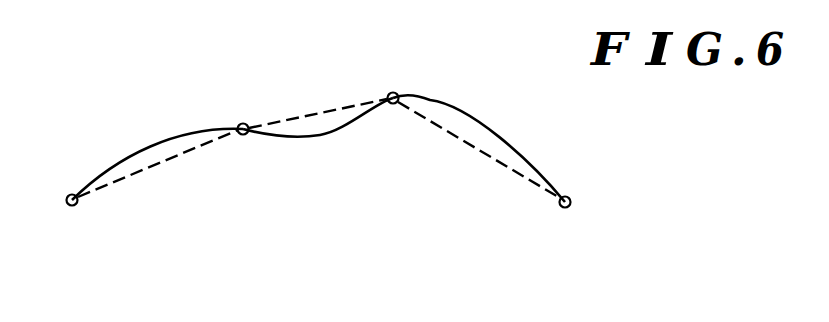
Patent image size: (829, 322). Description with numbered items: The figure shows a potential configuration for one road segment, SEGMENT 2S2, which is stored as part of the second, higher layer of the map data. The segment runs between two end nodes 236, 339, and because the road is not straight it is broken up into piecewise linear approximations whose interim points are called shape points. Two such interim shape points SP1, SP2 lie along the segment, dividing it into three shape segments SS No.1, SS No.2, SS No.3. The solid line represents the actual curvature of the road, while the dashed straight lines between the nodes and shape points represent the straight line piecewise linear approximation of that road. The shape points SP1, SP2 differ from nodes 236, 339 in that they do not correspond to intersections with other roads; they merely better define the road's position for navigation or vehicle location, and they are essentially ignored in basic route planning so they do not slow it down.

The node 236 is at (72, 219).
The node 339 is at (566, 221).
The shape point SP1 is at (242, 123).
The shape point SP2 is at (394, 92).
The shape segment SS No.1 is at (130, 157).
The shape segment SS No.2 is at (320, 137).
The shape segment SS No.3 is at (485, 128).
The road segment SEGMENT 2S2 is at (395, 258).